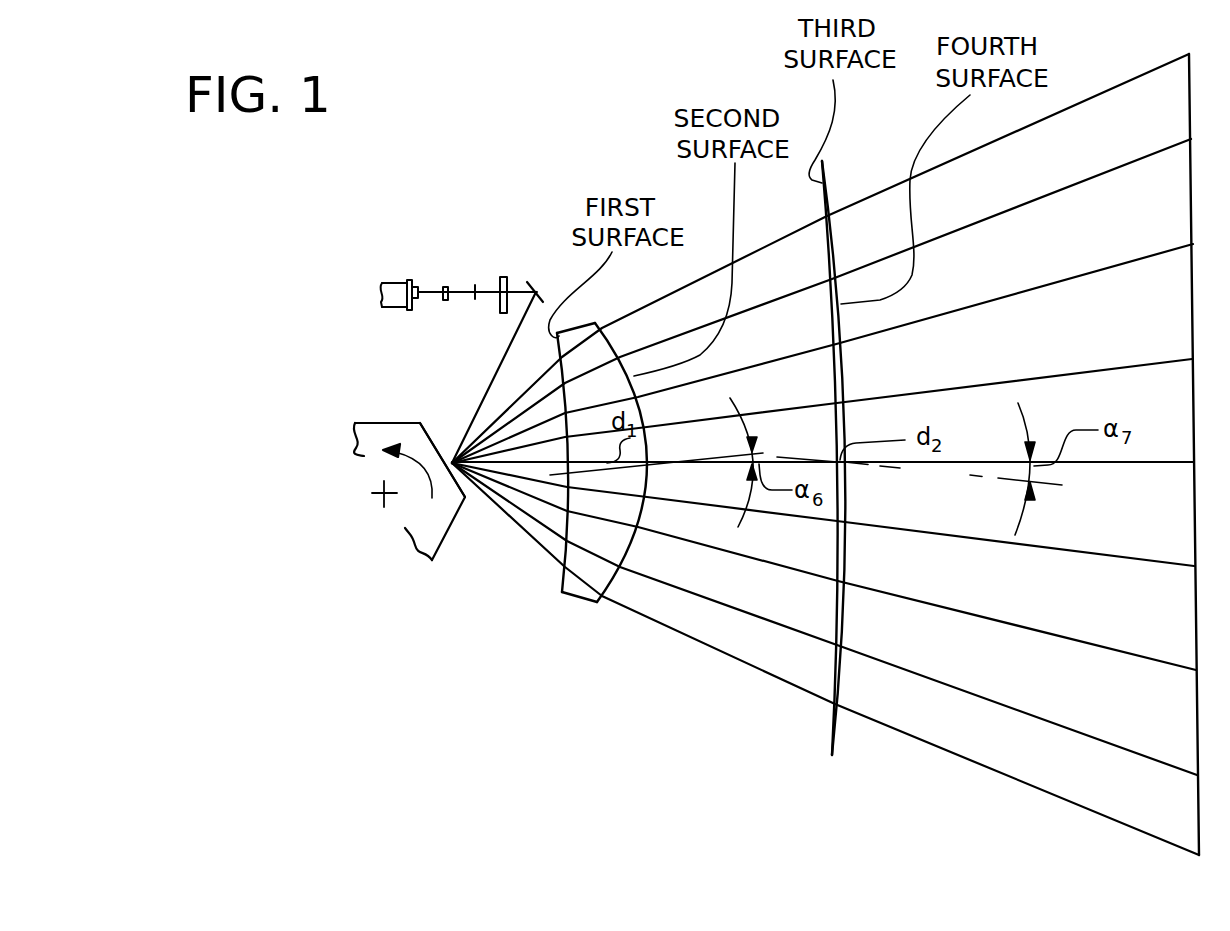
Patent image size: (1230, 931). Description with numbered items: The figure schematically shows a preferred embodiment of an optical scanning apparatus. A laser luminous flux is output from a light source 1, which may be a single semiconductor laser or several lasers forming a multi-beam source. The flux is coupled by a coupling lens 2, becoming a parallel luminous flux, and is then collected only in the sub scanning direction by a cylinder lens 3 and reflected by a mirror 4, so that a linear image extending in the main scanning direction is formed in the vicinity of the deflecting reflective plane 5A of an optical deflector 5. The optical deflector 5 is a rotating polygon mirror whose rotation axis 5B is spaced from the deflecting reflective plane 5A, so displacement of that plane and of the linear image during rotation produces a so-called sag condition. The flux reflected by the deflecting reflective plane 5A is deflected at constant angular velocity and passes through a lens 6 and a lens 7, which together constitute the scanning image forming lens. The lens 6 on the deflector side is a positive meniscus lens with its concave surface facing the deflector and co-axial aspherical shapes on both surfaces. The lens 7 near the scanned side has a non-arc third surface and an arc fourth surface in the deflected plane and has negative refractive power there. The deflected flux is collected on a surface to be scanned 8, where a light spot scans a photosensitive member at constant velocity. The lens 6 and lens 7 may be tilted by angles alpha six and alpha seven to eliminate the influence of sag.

The light source 1 is at (410, 280).
The coupling lens 2 is at (447, 286).
The cylinder lens 3 is at (503, 276).
The mirror 4 is at (538, 282).
The optical deflector 5 is at (440, 525).
The deflecting reflective plane 5A is at (432, 421).
The rotation axis 5B is at (380, 494).
The lens 6 is at (578, 597).
The lens 7 is at (832, 712).
The surface to be scanned 8 is at (1197, 820).